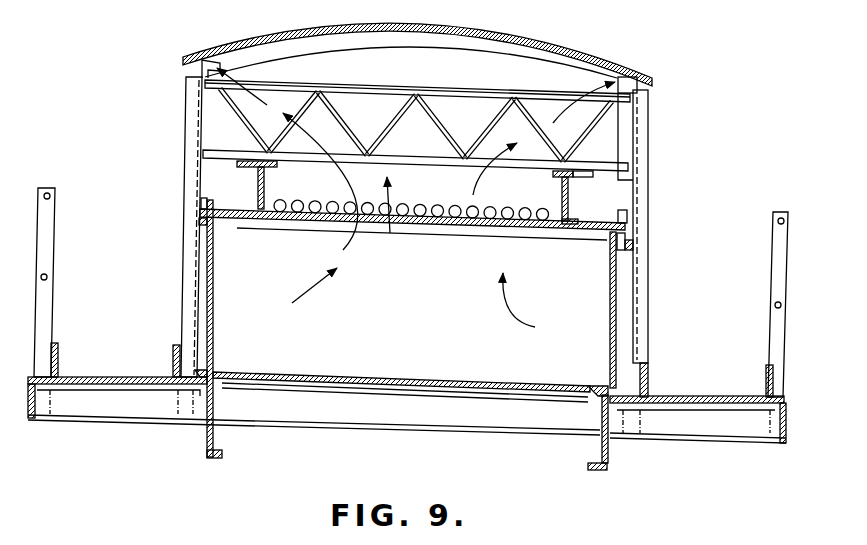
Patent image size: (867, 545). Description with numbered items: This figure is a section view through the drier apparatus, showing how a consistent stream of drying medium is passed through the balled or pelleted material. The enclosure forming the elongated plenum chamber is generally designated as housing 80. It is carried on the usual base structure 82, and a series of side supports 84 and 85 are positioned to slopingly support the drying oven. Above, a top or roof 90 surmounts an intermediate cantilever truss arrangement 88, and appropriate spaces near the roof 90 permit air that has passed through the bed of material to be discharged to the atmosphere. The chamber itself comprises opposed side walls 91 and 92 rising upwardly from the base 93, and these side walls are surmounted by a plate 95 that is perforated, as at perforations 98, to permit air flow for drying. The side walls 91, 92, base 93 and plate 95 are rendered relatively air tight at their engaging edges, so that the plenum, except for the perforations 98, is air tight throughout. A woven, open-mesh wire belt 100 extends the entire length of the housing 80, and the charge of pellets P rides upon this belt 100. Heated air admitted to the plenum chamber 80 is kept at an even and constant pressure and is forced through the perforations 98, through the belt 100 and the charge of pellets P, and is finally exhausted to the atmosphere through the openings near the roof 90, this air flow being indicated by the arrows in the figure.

The plenum chamber enclosure 80 is at (438, 263).
The base structure 82 is at (152, 376).
The side support 84 is at (187, 306).
The side support 85 is at (637, 341).
The cantilever truss arrangement 88 is at (407, 82).
The top 90 is at (502, 32).
The side wall 91 is at (213, 323).
The side wall 92 is at (610, 292).
The base 93 is at (413, 377).
The plate 95 is at (236, 218).
The perforations 98 is at (437, 218).
The wire belt 100 is at (424, 192).
The charge of pellets P is at (318, 198).